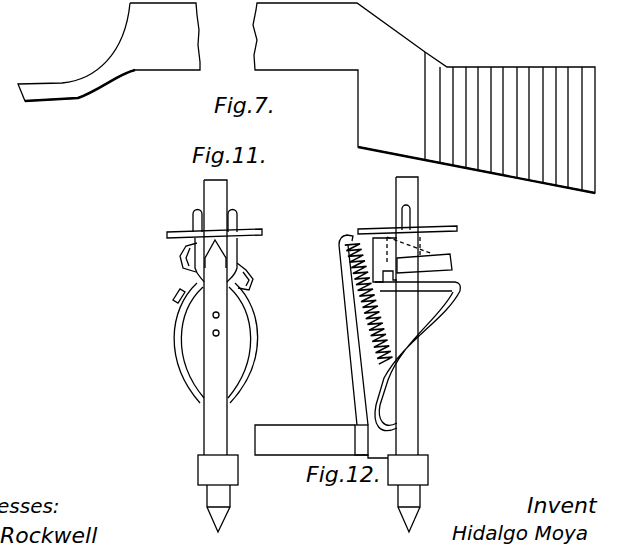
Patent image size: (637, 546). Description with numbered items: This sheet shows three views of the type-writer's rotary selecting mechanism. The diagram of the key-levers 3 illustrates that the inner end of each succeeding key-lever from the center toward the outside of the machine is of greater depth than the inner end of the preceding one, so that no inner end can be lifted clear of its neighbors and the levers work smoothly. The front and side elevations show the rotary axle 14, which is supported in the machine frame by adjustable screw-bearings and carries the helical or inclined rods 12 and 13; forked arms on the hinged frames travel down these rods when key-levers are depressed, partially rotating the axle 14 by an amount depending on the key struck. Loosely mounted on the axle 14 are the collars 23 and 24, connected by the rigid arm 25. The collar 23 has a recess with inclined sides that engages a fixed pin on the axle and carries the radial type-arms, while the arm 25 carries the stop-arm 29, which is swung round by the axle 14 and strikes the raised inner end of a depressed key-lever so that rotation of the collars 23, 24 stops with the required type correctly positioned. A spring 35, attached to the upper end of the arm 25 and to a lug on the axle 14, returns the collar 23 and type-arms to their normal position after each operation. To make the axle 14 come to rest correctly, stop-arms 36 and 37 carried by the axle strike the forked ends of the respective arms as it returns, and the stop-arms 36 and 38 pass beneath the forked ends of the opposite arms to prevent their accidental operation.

In FIG. 7, the blade strip section 3 is at (306, 96).
In FIG. 11, the helical rod 12 is at (256, 350).
In FIG. 11, the helical rod 13 is at (180, 366).
In FIG. 12, the helical rod 13 is at (422, 332).
In FIG. 11, the rotary axle 14 is at (218, 356).
In FIG. 12, the rotary axle 14 is at (408, 316).
In FIG. 11, the collar 23 is at (247, 233).
In FIG. 12, the collar 23 is at (427, 233).
In FIG. 12, the collar 24 is at (408, 493).
In FIG. 12, the rigid arm 25 is at (354, 357).
In FIG. 12, the stop-arm 29 is at (321, 441).
In FIG. 12, the spring 35 is at (363, 293).
In FIG. 11, the stop-arm 36 is at (251, 281).
In FIG. 11, the stop-arm 37 is at (182, 258).
In FIG. 12, the stop-arm 37 is at (433, 260).
In FIG. 11, the stop-arm 38 is at (177, 302).
In FIG. 12, the stop-arm 38 is at (448, 290).